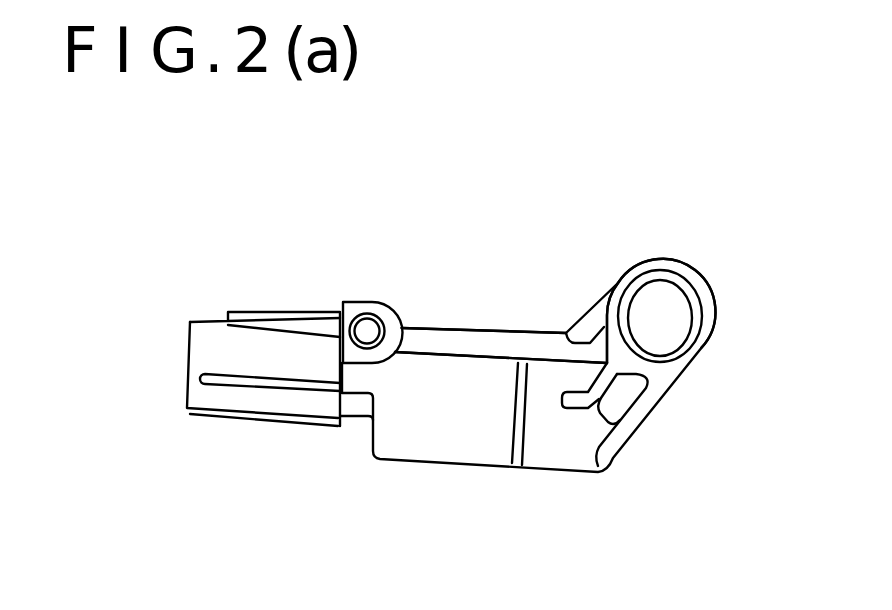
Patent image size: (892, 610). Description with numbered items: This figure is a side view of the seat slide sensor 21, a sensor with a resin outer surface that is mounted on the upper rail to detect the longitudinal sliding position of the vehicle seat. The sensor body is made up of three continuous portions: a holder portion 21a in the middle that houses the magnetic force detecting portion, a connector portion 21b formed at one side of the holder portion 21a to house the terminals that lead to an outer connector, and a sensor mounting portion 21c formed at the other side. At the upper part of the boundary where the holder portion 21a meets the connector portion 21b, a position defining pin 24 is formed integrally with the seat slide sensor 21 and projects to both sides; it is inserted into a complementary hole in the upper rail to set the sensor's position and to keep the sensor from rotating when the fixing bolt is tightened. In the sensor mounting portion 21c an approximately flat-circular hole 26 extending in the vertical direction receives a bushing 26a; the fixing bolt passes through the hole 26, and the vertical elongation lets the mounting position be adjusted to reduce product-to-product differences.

The seat slide sensor 21 is at (529, 259).
The holder portion 21a is at (481, 338).
The connector portion 21b is at (260, 334).
The sensor mounting portion 21c is at (660, 262).
The position defining pin 24 is at (361, 306).
The hole 26 is at (686, 328).
The bushing 26a is at (688, 349).